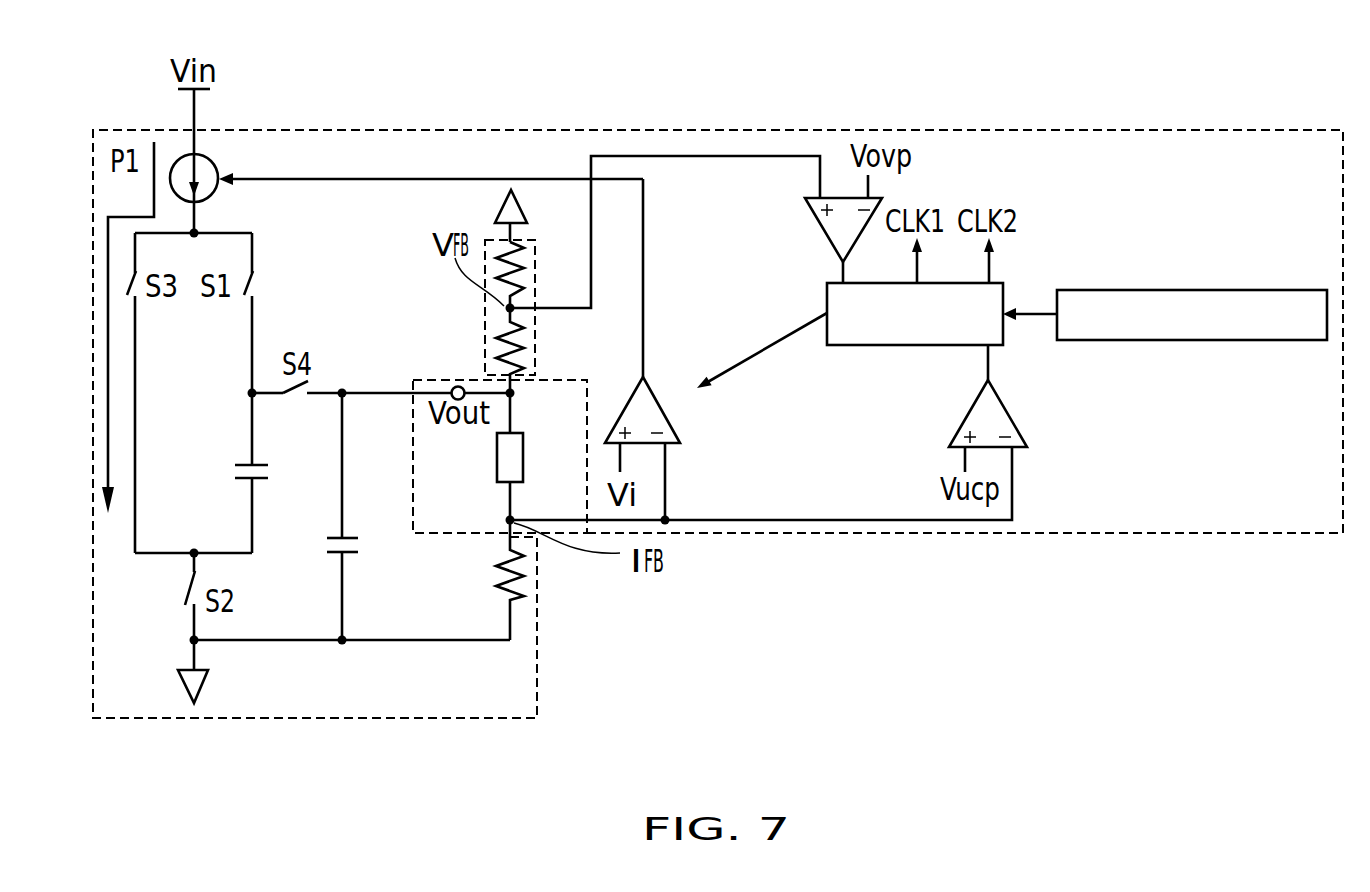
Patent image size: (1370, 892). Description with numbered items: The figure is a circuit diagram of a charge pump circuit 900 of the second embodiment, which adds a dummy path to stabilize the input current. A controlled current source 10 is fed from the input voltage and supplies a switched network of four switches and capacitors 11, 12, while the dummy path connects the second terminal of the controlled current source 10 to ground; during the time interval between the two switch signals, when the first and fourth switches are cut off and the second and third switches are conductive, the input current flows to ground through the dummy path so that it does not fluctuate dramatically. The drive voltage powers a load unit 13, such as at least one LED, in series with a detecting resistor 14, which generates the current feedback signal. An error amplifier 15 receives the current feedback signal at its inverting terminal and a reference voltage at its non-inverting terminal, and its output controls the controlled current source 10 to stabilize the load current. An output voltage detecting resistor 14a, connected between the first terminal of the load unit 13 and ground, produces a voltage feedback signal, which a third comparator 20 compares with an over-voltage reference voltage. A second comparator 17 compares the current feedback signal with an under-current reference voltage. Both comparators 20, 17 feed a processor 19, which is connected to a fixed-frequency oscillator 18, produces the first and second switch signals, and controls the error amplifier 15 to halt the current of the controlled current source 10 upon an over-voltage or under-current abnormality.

The charge pump circuit 900 is at (467, 130).
The controlled current source 10 is at (212, 200).
The capacitor 11 is at (235, 472).
The capacitor 12 is at (337, 556).
The load unit 13 is at (497, 462).
The detecting resistor 14 is at (497, 573).
The output voltage detecting resistor 14a is at (483, 316).
The error amplifier 15 is at (658, 400).
The second comparator 17 is at (1013, 422).
The oscillator 18 is at (1228, 342).
The processor 19 is at (1005, 297).
The third comparator 20 is at (818, 220).